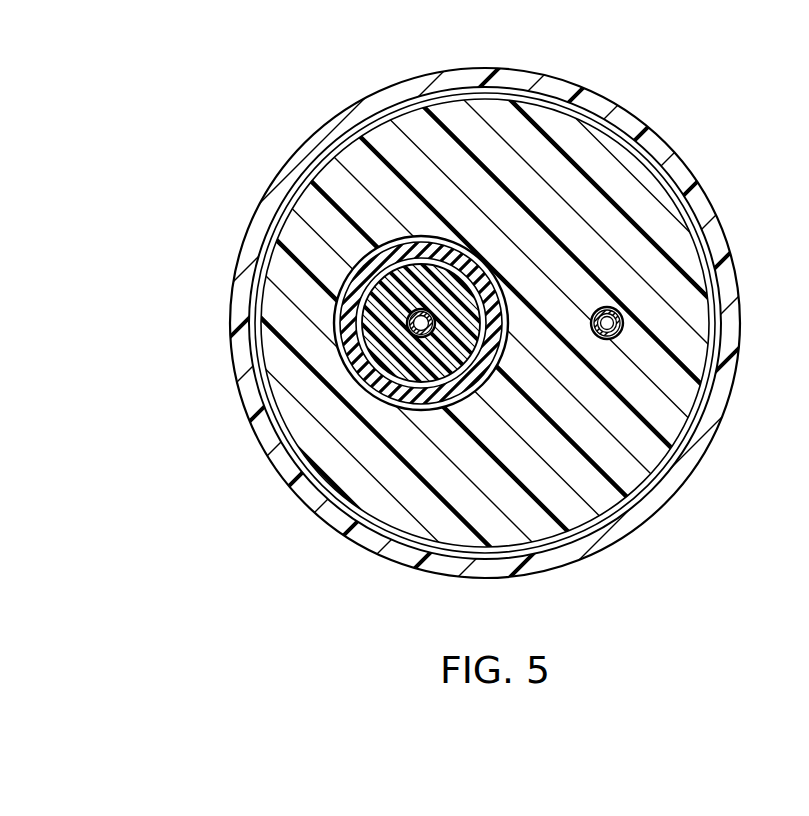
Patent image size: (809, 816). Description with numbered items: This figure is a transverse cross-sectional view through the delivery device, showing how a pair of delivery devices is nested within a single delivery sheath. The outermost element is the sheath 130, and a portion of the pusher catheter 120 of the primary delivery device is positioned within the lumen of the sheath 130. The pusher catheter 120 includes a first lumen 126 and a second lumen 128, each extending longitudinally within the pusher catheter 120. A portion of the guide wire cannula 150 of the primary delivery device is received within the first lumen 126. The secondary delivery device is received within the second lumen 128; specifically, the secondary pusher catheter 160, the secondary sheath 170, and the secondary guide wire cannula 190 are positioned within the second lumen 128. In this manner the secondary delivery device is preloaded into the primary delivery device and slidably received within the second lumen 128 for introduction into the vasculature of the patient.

The pusher catheter 120 is at (600, 165).
The first lumen 126 is at (618, 312).
The second lumen 128 is at (327, 322).
The sheath 130 is at (555, 87).
The guide wire cannula 150 is at (606, 308).
The secondary pusher catheter 160 is at (390, 278).
The secondary sheath 170 is at (353, 305).
The secondary guide wire cannula 190 is at (416, 306).